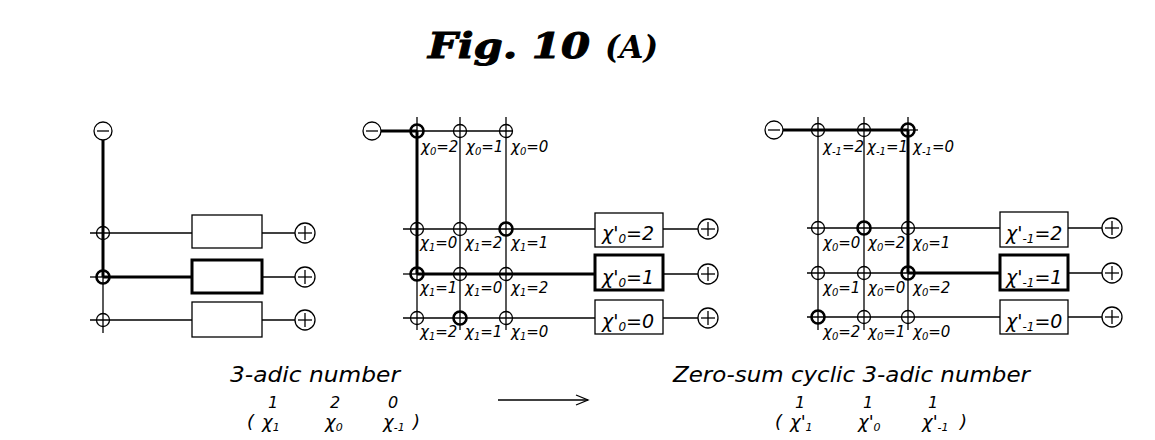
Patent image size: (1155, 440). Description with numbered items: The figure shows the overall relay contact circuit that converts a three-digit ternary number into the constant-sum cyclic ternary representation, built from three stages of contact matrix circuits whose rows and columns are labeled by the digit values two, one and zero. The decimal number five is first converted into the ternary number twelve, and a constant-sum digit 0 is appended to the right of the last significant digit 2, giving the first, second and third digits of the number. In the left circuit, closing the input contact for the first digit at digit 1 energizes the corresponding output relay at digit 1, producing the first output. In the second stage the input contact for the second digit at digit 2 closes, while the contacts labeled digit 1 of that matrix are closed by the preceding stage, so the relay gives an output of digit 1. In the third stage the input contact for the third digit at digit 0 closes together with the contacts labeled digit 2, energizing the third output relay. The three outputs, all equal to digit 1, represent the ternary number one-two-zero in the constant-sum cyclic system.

The digit 2 (contact / input digit value) 2 is at (202, 230).
The digit 1 (contact / output digit value) 1 is at (202, 274).
The constant-sum digit 0 is at (202, 318).